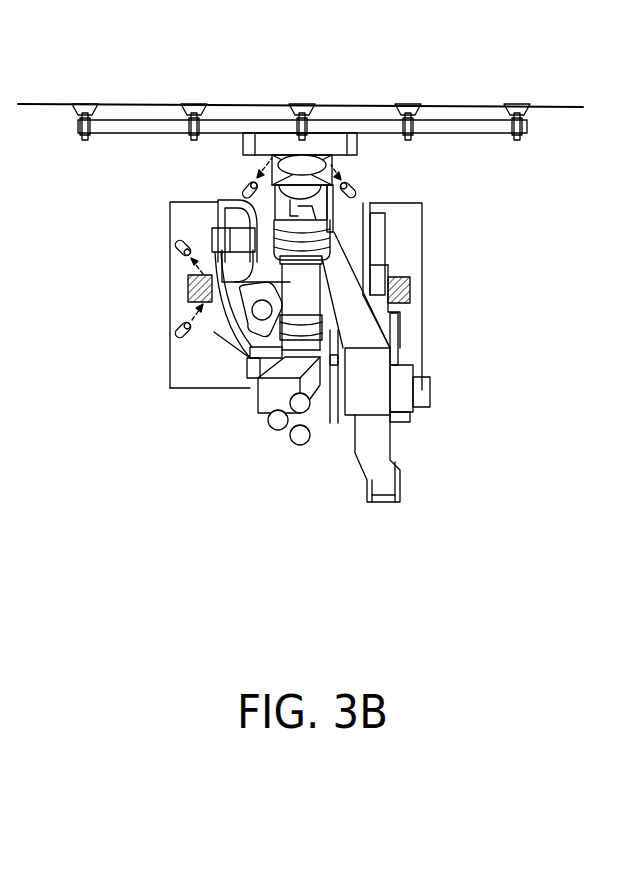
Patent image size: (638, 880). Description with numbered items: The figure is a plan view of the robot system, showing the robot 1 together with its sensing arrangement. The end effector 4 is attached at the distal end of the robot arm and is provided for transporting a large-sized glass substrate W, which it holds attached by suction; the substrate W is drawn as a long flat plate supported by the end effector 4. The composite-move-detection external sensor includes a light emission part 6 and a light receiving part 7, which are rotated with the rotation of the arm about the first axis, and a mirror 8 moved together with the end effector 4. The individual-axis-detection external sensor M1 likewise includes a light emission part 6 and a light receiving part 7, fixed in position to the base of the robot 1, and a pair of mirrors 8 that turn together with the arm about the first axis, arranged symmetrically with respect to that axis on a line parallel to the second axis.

The glass substrate W is at (552, 106).
The end effector 4 is at (472, 134).
The robot 1 is at (494, 343).
The individual-axis-detection external sensor M1 is at (112, 233).
The light receiving part 7 is at (246, 192).
The light emission part 6 is at (358, 191).
The mirror 8 is at (188, 292).